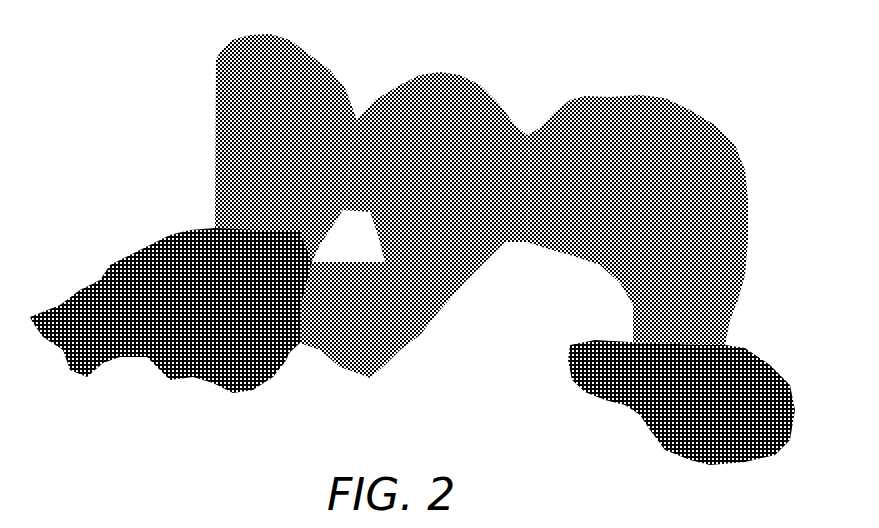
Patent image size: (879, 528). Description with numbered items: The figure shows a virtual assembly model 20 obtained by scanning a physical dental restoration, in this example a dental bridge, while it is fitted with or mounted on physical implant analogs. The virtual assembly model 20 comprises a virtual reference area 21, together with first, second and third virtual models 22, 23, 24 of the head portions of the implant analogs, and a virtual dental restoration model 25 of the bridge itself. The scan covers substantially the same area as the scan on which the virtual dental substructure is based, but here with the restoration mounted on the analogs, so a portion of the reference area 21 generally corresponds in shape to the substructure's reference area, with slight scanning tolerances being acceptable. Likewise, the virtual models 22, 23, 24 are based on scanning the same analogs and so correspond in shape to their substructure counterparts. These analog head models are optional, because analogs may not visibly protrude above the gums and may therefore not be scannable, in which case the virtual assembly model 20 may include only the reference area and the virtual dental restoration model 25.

The virtual assembly model 20 is at (423, 244).
The virtual reference area 21 is at (117, 332).
The first virtual model of implant analog head portion 22 is at (253, 268).
The second virtual model of implant analog head portion 23 is at (413, 307).
The third virtual model of implant analog head portion 24 is at (687, 346).
The virtual dental restoration model 25 is at (690, 231).